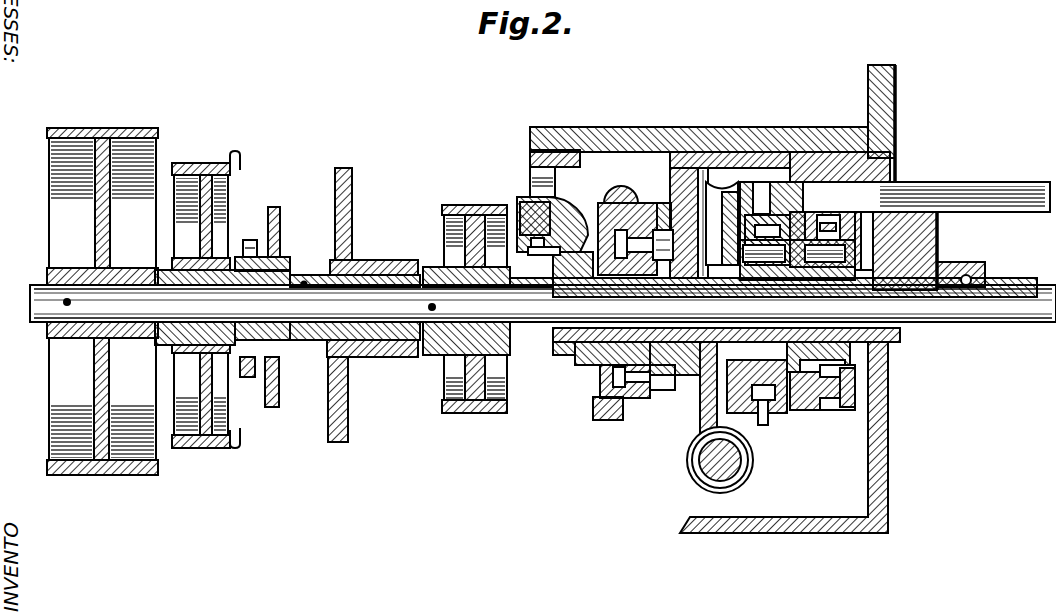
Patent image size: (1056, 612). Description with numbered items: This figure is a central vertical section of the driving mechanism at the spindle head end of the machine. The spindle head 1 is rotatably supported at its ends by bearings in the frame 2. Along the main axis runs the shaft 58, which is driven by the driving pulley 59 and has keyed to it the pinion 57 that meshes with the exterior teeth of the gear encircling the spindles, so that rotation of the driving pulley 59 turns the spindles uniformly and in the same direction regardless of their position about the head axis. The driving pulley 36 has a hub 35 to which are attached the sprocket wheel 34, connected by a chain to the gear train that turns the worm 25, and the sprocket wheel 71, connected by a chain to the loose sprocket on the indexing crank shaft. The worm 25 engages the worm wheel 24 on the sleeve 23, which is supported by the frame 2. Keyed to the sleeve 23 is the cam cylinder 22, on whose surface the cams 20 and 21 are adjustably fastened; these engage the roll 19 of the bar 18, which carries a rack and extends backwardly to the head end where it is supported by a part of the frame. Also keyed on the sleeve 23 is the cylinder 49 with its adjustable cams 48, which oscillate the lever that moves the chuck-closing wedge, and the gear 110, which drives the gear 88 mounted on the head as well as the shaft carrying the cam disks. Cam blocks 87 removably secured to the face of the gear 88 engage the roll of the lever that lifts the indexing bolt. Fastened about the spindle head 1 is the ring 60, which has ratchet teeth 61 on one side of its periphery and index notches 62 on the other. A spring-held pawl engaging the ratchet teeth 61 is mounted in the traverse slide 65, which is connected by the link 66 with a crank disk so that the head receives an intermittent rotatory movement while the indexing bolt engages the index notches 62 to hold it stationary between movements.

The spindle head 1 is at (896, 96).
The frame 2 is at (889, 498).
The bar 18 is at (924, 190).
The roll 19 is at (764, 181).
The cam 20 is at (784, 414).
The cam 21 is at (820, 213).
The cam cylinder 22 is at (850, 410).
The sleeve 23 is at (800, 408).
The worm wheel 24 is at (700, 426).
The worm 25 is at (688, 472).
The sprocket wheel 34 is at (279, 391).
The hub 35 is at (283, 236).
The driving pulley 36 is at (206, 172).
The cam 48 is at (660, 204).
The cylinder 49 is at (580, 370).
The pinion 57 is at (472, 412).
The shaft 58 is at (432, 314).
The driving pulley 59 is at (47, 242).
The ring 60 is at (548, 157).
The ratchet teeth 61 is at (620, 190).
The index notches 62 is at (534, 182).
The traverse slide 65 is at (536, 255).
The link 66 is at (513, 202).
The sprocket wheel 71 is at (251, 240).
The cam blocks 87 is at (672, 163).
The gear 88 is at (700, 161).
The gear 110 is at (688, 384).